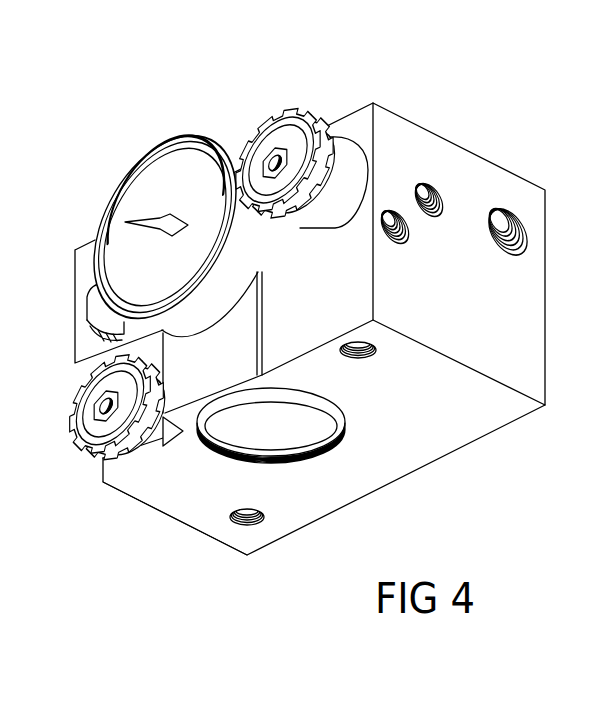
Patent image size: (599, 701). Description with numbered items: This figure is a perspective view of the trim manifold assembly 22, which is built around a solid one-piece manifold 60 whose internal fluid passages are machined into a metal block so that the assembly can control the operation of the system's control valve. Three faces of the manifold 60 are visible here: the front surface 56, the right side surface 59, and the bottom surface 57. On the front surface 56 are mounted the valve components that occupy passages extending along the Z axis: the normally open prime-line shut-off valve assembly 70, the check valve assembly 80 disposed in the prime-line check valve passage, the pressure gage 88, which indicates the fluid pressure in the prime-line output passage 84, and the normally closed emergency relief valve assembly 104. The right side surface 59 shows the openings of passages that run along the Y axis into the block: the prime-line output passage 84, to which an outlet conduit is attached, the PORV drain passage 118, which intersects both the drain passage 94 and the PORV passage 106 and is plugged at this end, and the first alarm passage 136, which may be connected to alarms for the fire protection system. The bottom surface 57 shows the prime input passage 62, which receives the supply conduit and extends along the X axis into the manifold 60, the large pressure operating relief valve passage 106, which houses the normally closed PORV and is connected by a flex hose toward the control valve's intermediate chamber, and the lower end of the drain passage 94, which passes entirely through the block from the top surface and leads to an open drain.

The trim manifold assembly 22 is at (294, 288).
The front surface 56 is at (265, 150).
The bottom surface 57 is at (213, 523).
The right side surface 59 is at (525, 364).
The manifold 60 is at (152, 493).
The prime input passage 62 is at (258, 530).
The prime-line shut-off valve assembly 70 is at (73, 427).
The check valve assembly 80 is at (97, 297).
The prime-line output passage 84 is at (437, 183).
The pressure gage 88 is at (150, 203).
The drain passage 94 is at (368, 360).
The emergency relief valve assembly 104 is at (262, 128).
The pressure operating relief valve (PORV) passage 106 is at (325, 434).
The PORV drain passage 118 is at (398, 207).
The first alarm passage 136 is at (498, 207).